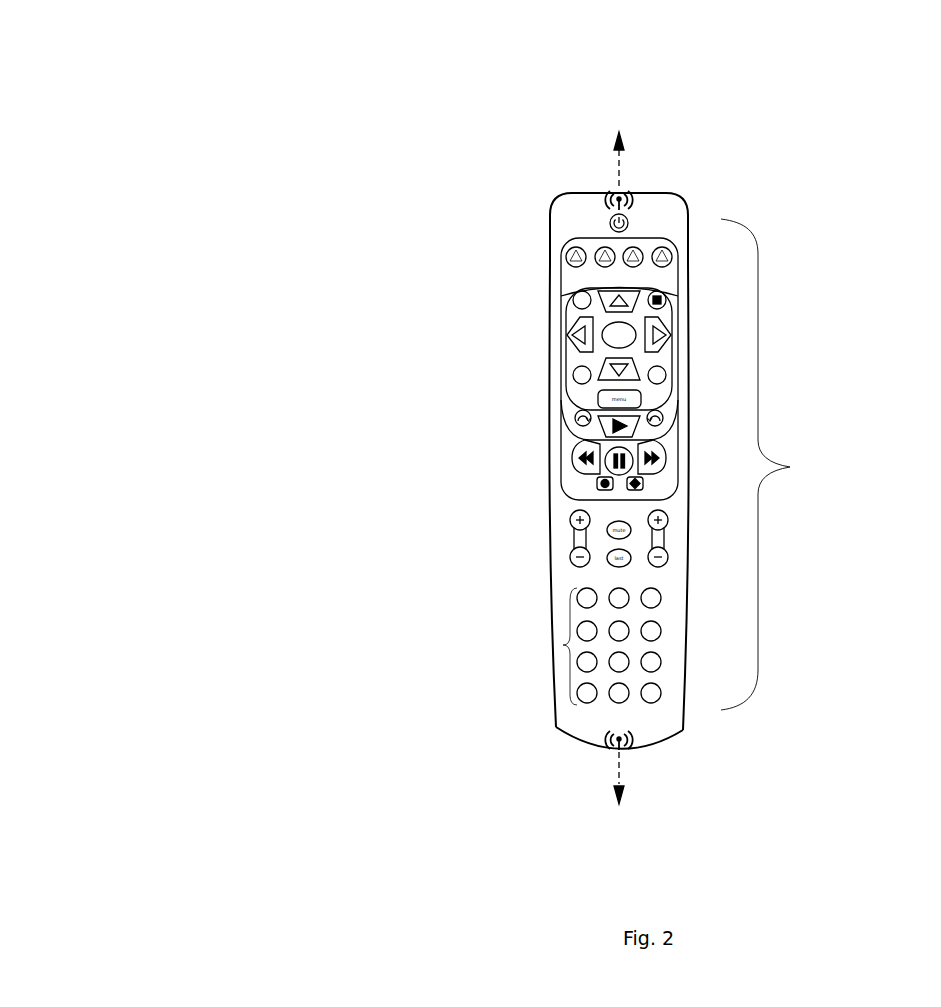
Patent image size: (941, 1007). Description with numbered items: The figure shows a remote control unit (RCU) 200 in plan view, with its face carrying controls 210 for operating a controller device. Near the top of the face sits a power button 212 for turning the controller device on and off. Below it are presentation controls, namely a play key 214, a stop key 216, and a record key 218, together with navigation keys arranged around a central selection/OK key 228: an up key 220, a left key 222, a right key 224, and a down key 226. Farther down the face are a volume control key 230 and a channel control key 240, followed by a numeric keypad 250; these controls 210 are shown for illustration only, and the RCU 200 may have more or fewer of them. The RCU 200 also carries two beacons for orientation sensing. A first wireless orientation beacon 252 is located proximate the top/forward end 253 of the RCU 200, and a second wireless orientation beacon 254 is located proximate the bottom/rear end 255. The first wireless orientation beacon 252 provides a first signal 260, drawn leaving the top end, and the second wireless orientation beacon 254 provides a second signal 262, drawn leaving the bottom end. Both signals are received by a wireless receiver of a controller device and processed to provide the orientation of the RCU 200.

The remote control unit 200 is at (108, 89).
The controls 210 is at (760, 508).
The power button 212 is at (609, 226).
The play key 214 is at (605, 431).
The stop key 216 is at (636, 489).
The record key 218 is at (598, 488).
The up key 220 is at (609, 364).
The left key 222 is at (568, 350).
The right key 224 is at (671, 324).
The down key 226 is at (632, 378).
The selection/OK key 228 is at (631, 342).
The volume control key 230 is at (574, 536).
The channel control key 240 is at (665, 538).
The numeric keypad 250 is at (572, 624).
The first wireless orientation beacon 252 is at (612, 195).
The top/forward end 253 is at (545, 217).
The second wireless orientation beacon 254 is at (610, 749).
The bottom/rear end 255 is at (693, 722).
The first signal 260 is at (623, 162).
The second signal 262 is at (623, 775).